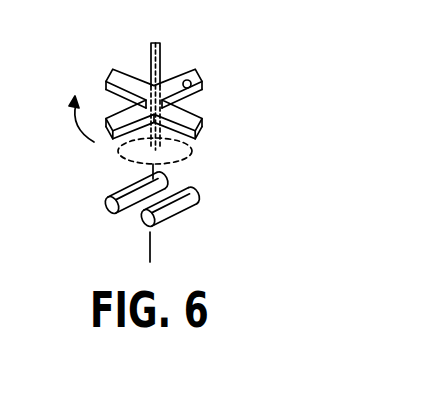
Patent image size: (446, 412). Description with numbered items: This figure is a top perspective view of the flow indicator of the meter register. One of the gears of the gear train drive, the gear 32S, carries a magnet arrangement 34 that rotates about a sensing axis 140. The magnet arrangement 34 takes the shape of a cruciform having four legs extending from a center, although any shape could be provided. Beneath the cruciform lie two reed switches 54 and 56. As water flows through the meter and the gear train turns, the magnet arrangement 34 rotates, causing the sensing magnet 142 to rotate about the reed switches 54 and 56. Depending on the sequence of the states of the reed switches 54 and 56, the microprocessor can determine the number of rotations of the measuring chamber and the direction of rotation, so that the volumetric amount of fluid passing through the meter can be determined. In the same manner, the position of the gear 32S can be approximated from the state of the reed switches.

The magnet arrangement 34 is at (212, 111).
The sensing axis 140 is at (168, 73).
The sensing magnet 142 is at (196, 79).
The gear 32S is at (193, 151).
The reed switch 56 is at (122, 190).
The reed switch 54 is at (185, 212).